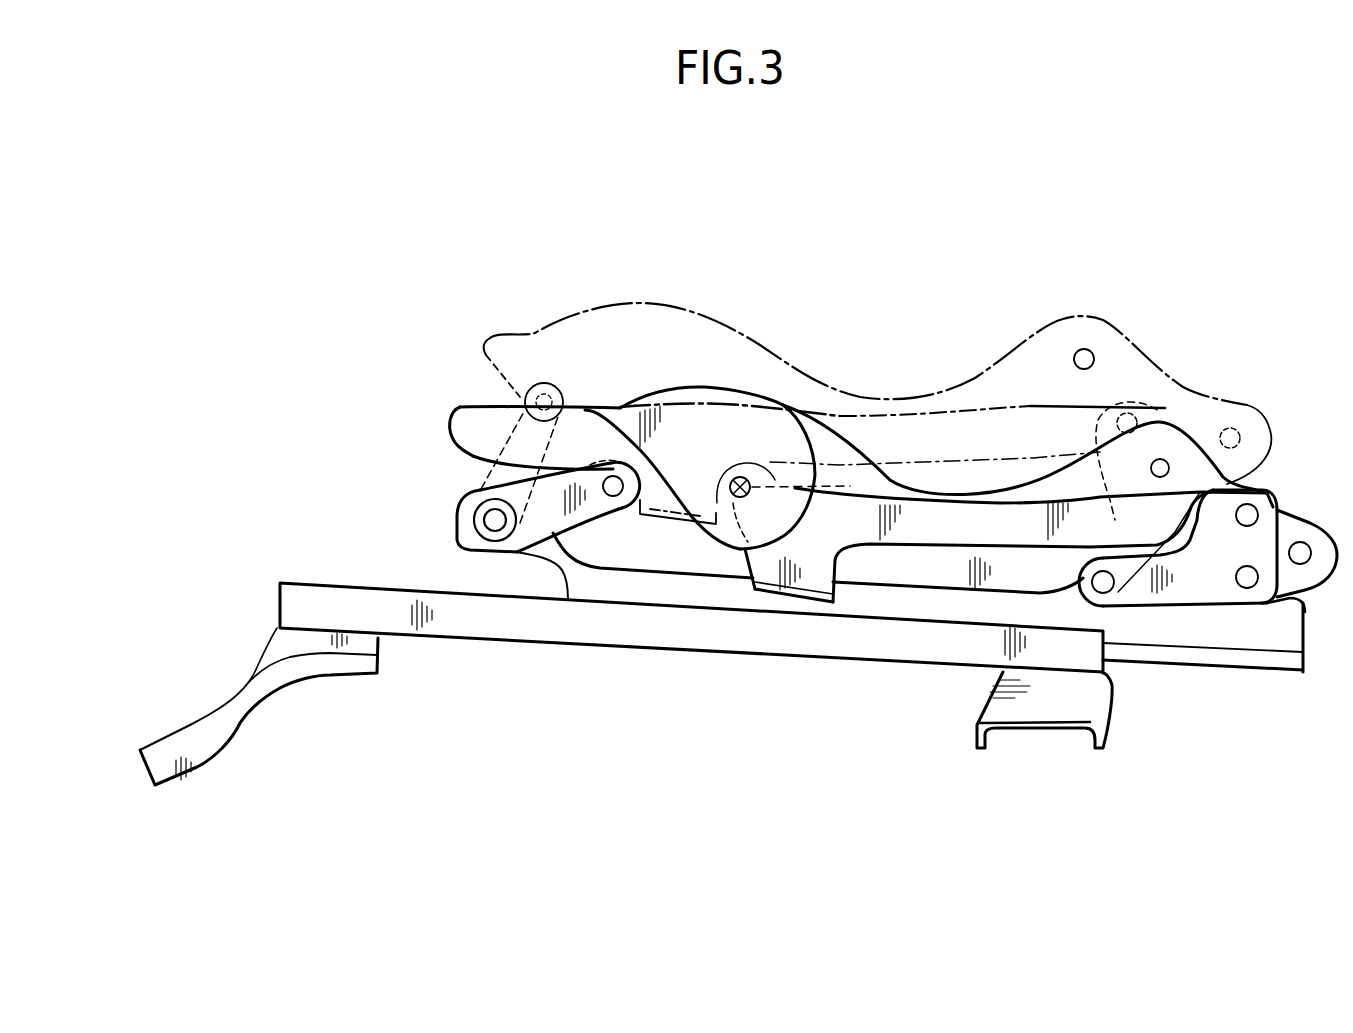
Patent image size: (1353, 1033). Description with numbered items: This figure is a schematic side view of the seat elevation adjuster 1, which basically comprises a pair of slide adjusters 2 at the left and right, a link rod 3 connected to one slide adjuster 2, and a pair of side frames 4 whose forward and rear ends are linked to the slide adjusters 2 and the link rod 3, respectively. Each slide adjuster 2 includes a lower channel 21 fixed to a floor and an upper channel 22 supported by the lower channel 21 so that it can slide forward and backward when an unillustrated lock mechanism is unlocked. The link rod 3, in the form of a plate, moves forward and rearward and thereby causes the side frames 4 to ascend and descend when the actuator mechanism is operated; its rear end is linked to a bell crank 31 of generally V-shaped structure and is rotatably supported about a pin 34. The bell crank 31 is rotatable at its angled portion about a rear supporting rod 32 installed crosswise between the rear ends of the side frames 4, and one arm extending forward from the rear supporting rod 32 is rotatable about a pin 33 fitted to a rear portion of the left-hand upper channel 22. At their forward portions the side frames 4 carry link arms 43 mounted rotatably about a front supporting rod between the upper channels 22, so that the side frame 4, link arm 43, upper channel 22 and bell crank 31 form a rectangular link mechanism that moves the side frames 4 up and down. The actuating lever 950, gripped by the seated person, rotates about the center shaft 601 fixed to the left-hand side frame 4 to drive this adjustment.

The seat elevation adjuster 1 is at (1157, 276).
The slide adjuster 2 is at (692, 712).
The lower channel 21 is at (575, 632).
The upper channel 22 is at (668, 590).
The link rod 3 is at (912, 537).
The bell crank 31 is at (1183, 592).
The rear supporting rod 32 is at (1250, 585).
The pin 33 is at (1103, 594).
The pin 34 is at (1256, 508).
The side frame 4 is at (1040, 478).
The link arm 43 is at (528, 527).
The center shaft 601 is at (750, 493).
The actuating lever 950 is at (475, 418).